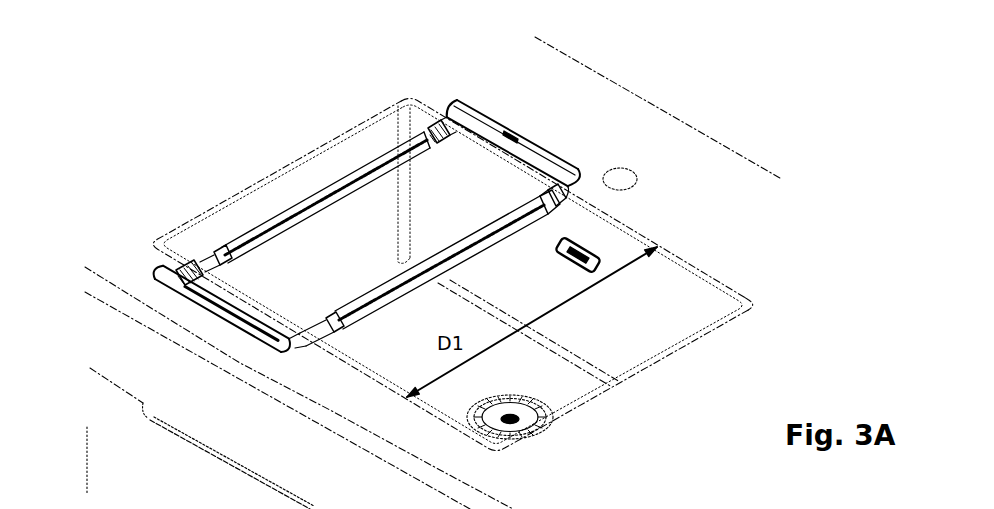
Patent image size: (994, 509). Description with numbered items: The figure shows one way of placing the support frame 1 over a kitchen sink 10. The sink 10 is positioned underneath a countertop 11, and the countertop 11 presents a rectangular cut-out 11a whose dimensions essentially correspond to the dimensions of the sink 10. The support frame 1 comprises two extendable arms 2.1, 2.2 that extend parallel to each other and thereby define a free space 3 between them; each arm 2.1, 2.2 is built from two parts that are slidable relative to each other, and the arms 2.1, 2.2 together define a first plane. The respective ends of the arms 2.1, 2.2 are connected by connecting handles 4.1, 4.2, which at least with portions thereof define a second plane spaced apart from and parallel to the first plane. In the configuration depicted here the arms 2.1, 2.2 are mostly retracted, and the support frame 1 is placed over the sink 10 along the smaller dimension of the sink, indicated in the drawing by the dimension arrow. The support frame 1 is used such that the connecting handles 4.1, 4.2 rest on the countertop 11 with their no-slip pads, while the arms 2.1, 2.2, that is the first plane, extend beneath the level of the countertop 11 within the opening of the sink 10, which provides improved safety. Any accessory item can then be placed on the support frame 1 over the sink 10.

The support frame 1 is at (399, 193).
The extendable arm 2.1 is at (437, 250).
The extendable arm 2.2 is at (290, 208).
The free space 3 is at (382, 249).
The connecting handle 4.1 is at (200, 307).
The connecting handle 4.2 is at (490, 120).
The kitchen sink 10 is at (640, 346).
The countertop 11 is at (727, 218).
The rectangular cut-out 11a is at (690, 272).